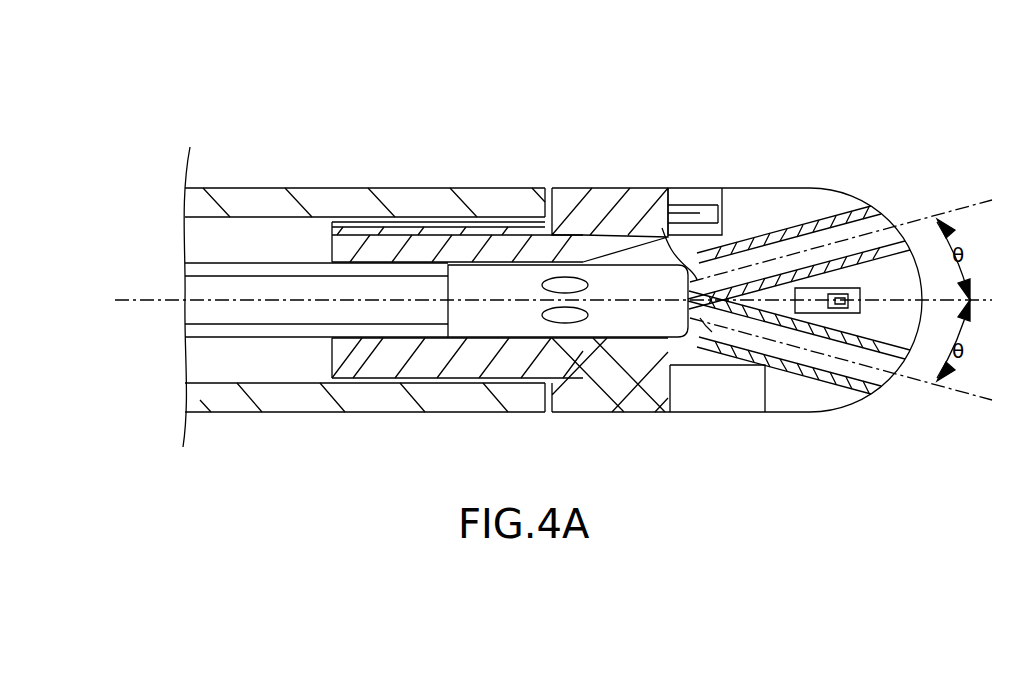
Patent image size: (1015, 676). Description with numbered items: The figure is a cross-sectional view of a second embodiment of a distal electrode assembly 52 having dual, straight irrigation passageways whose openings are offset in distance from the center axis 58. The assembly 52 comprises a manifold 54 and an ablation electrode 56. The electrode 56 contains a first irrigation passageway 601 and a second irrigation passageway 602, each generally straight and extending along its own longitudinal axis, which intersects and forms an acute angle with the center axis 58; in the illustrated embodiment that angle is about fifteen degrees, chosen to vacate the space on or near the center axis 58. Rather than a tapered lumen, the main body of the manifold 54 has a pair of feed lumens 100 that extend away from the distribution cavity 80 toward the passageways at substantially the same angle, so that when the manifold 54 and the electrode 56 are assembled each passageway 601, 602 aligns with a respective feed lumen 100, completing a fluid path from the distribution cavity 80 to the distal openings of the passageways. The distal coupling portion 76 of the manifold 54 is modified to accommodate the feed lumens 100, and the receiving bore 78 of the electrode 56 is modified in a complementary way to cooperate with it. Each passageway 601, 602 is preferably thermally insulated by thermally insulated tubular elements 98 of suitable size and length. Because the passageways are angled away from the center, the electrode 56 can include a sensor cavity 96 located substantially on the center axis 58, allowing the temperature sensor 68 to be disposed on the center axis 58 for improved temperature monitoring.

The distal electrode assembly 52 is at (637, 97).
The manifold 54 is at (568, 184).
The ablation electrode 56 is at (687, 184).
The center axis 58 is at (158, 304).
The first irrigation passageway 601 is at (887, 214).
The second irrigation passageway 602 is at (887, 380).
The temperature sensor 68 is at (855, 311).
The distal coupling portion 76 is at (716, 365).
The receiving bore 78 is at (728, 212).
The distribution cavity 80 is at (532, 329).
The sensor cavity 96 is at (852, 296).
The thermally insulated tubular elements 98 is at (828, 208).
The feed lumens 100 is at (670, 228).